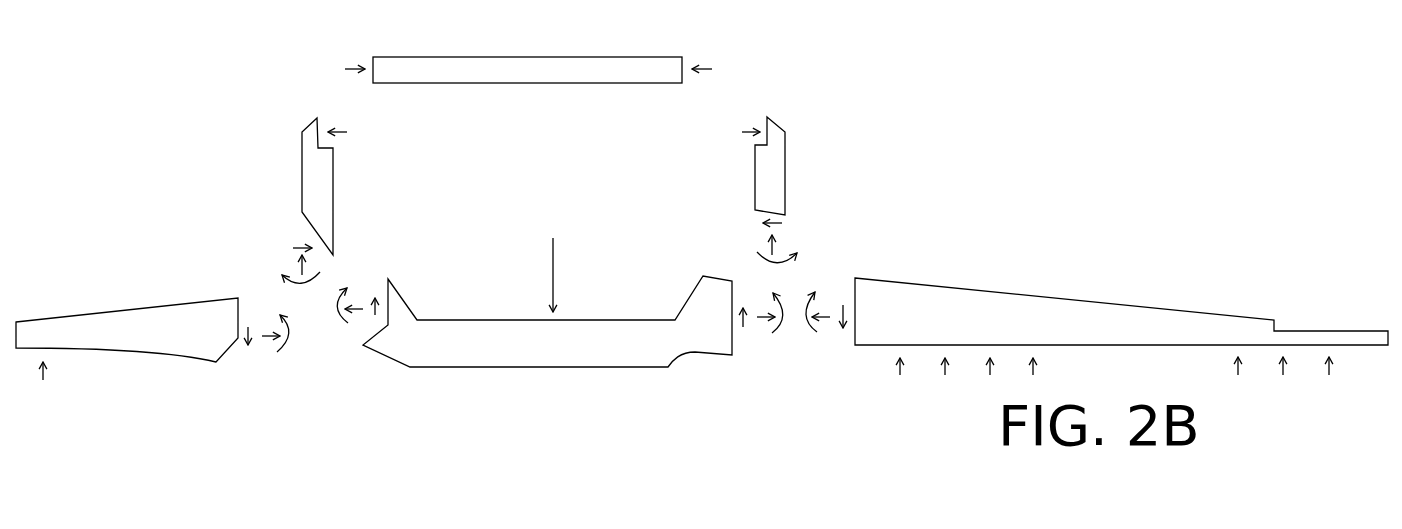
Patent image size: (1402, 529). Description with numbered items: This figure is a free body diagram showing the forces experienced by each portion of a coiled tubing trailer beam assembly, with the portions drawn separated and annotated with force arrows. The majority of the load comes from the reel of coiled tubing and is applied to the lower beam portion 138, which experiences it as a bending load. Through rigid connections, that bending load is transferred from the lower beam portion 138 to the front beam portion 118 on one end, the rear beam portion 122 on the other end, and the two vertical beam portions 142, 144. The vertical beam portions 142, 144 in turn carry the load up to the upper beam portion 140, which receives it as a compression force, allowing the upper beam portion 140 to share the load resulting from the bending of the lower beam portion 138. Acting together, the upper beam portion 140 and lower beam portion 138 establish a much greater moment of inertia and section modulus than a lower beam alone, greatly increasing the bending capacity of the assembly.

The front beam portion 118 is at (127, 308).
The rear beam portion 122 is at (973, 288).
The lower beam portion 138 is at (477, 320).
The upper beam portion 140 is at (540, 57).
The vertical beam portion 142 is at (333, 208).
The vertical beam portion 144 is at (787, 173).